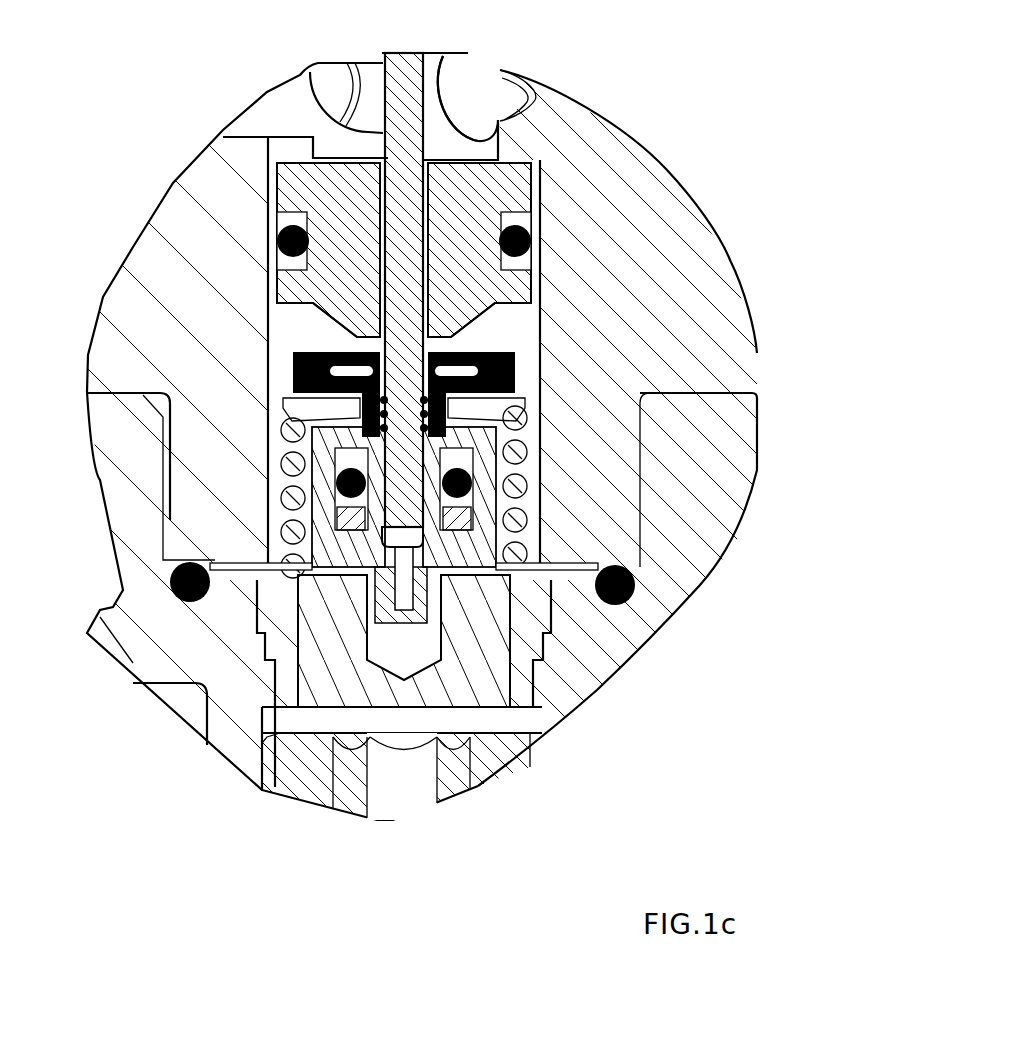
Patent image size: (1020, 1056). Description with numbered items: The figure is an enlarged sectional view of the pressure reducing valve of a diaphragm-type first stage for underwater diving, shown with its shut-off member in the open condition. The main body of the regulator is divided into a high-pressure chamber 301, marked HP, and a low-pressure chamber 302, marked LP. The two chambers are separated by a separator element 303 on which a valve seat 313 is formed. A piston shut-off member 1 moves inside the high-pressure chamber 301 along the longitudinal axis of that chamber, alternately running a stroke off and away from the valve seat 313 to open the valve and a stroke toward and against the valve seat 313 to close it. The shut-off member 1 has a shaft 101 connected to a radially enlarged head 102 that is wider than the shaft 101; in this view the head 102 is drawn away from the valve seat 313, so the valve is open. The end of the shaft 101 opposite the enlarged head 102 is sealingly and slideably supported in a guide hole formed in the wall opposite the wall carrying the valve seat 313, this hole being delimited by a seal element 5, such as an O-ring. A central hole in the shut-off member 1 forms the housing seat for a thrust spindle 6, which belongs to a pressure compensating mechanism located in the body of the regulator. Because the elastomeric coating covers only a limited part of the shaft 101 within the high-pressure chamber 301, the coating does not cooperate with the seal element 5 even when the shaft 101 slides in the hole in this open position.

The piston shut-off member 1 is at (510, 348).
The seal element 5 is at (345, 490).
The thrust spindle 6 is at (403, 522).
The shaft 101 is at (380, 600).
The radially enlarged head 102 is at (520, 390).
The high-pressure chamber 301 is at (488, 337).
The low-pressure chamber 302 is at (440, 147).
The separator element 303 is at (333, 290).
The valve seat 313 is at (367, 338).